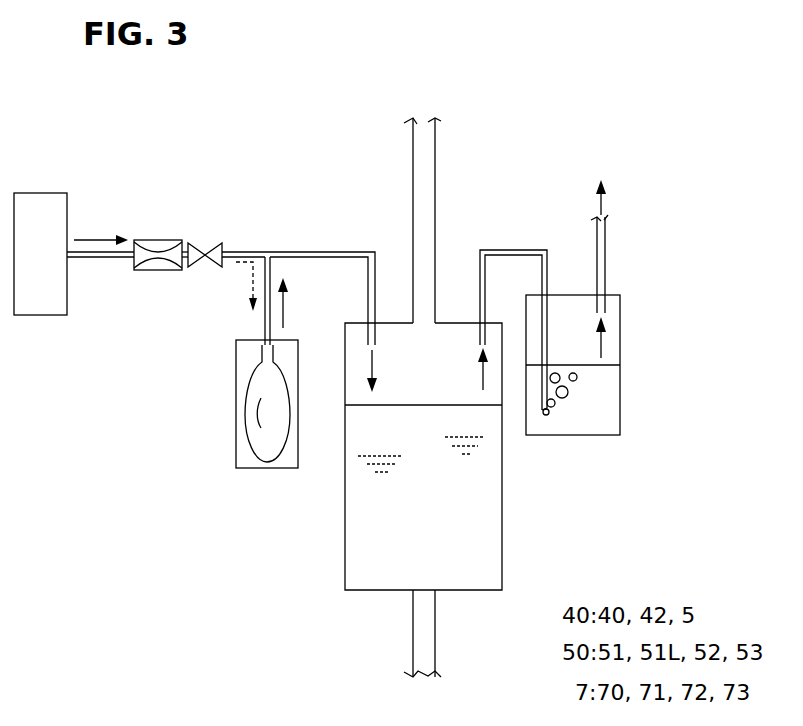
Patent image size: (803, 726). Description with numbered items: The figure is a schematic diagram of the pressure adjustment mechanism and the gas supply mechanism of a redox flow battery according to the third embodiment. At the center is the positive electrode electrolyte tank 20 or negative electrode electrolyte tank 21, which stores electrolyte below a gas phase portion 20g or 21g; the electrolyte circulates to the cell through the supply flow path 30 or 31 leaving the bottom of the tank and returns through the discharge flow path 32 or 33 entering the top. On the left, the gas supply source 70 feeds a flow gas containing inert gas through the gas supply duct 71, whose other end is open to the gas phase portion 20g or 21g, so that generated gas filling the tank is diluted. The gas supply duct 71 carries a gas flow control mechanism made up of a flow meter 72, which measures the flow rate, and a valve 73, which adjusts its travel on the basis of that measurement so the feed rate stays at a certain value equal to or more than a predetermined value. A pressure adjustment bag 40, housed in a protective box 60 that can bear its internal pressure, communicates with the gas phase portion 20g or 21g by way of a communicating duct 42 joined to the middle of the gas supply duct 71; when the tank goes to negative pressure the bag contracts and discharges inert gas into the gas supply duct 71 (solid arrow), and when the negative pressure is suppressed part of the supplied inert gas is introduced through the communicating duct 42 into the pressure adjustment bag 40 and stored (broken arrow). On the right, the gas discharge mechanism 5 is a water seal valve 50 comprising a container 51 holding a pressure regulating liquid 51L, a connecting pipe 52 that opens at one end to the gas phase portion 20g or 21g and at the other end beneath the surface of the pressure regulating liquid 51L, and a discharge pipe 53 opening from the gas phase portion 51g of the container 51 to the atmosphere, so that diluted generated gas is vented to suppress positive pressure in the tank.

The gas supply source 70 is at (48, 193).
The gas supply duct 71 is at (300, 252).
The flow meter 72 is at (158, 240).
The valve 73 is at (201, 243).
The communicating duct 42 is at (265, 331).
The pressure adjustment bag 40 is at (248, 388).
The box 60 is at (236, 448).
The discharge flow path 32 is at (413, 162).
The discharge flow path 33 is at (354, 213).
The positive electrode electrolyte tank 20 is at (345, 518).
The negative electrode electrolyte tank 21 is at (346, 456).
The gas phase portion 20g is at (494, 393).
The gas phase portion 21g is at (500, 417).
The supply flow path 30 is at (413, 644).
The supply flow path 31 is at (331, 636).
The connecting pipe 52 is at (481, 250).
The container 51 is at (621, 366).
The gas phase portion 51g is at (608, 340).
The pressure regulating liquid 51L is at (607, 400).
The discharge pipe 53 is at (607, 263).
The water seal valve 50 is at (666, 283).
The gas discharge mechanism 5 is at (616, 305).